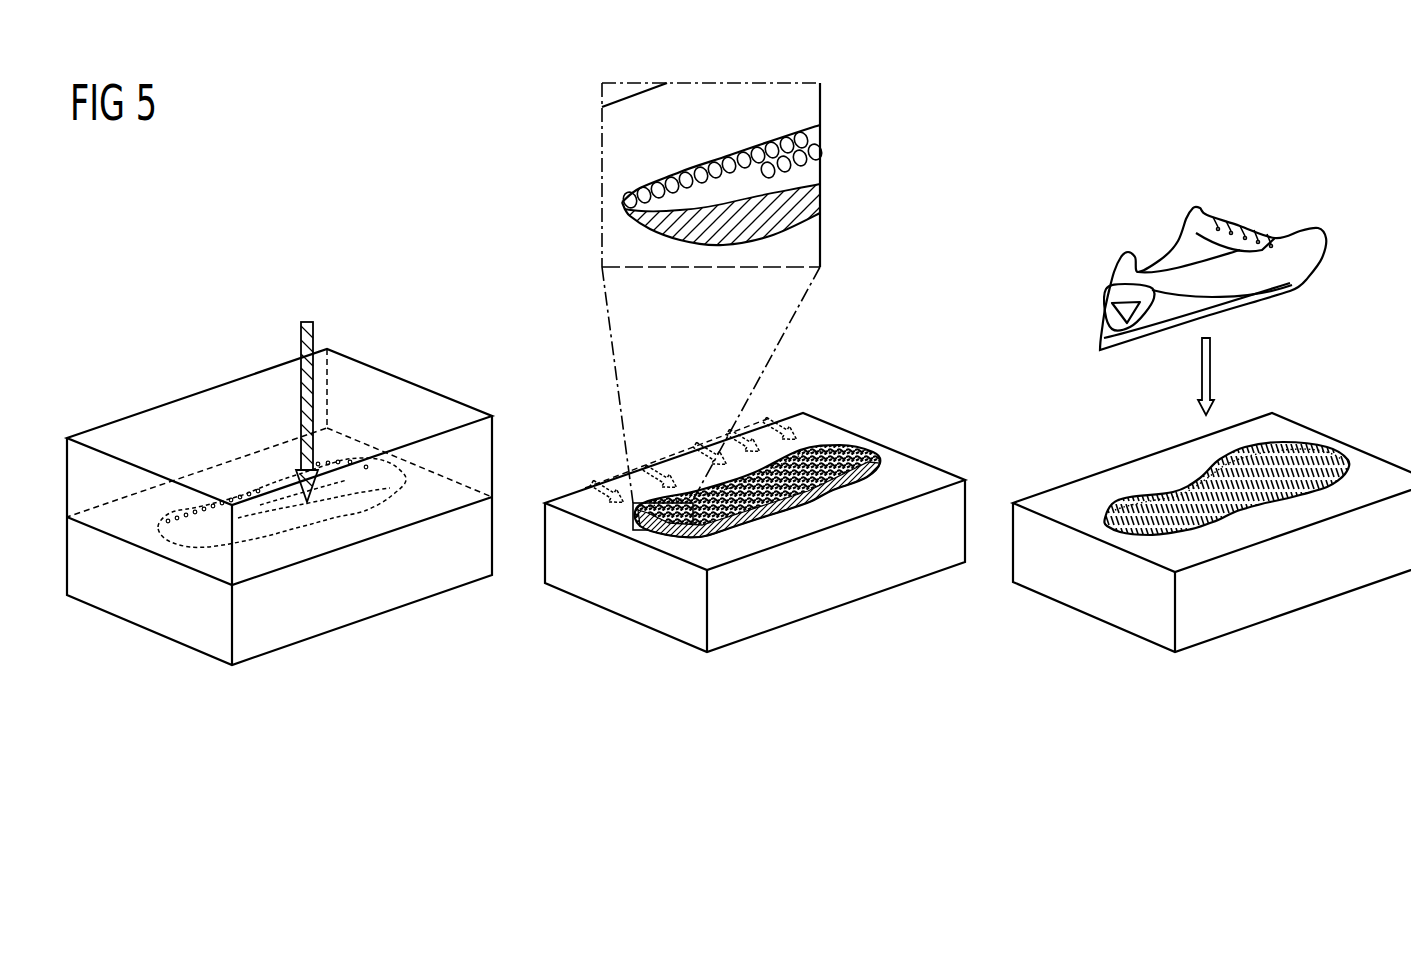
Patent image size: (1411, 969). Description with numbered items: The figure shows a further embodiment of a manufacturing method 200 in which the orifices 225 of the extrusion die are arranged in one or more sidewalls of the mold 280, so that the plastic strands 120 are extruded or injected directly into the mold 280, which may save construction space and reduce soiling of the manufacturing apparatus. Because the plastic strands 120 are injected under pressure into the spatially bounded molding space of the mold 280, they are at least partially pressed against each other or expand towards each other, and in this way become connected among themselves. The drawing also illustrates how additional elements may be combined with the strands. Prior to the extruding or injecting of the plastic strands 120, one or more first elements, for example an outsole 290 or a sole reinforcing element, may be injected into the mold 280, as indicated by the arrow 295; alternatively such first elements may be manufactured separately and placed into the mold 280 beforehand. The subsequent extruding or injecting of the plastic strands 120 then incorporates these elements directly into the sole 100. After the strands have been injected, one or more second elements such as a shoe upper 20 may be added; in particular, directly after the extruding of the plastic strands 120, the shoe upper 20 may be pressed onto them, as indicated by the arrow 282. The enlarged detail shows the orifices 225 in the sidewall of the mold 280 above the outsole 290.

The shoe upper 20 is at (1293, 247).
The sole 100 is at (1163, 480).
The plastic strands 120 is at (813, 470).
The manufacturing method 200 is at (388, 232).
The orifices 225 is at (773, 158).
The mold 280 is at (375, 593).
The arrow 282 is at (1228, 376).
The outsole 290 is at (805, 217).
The arrow 295 is at (305, 318).